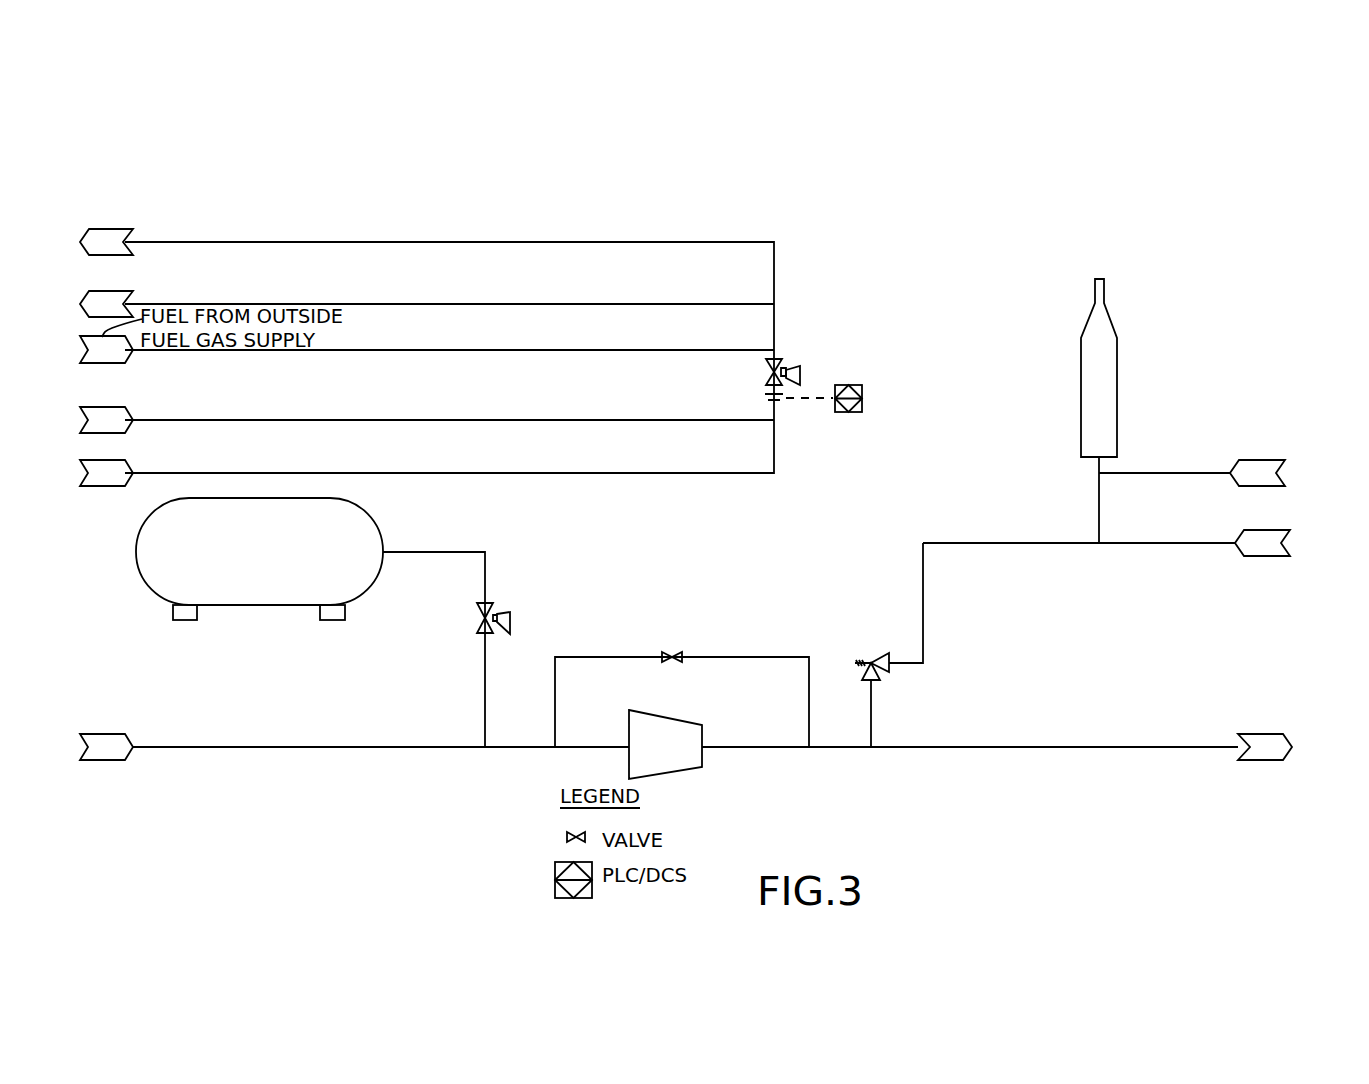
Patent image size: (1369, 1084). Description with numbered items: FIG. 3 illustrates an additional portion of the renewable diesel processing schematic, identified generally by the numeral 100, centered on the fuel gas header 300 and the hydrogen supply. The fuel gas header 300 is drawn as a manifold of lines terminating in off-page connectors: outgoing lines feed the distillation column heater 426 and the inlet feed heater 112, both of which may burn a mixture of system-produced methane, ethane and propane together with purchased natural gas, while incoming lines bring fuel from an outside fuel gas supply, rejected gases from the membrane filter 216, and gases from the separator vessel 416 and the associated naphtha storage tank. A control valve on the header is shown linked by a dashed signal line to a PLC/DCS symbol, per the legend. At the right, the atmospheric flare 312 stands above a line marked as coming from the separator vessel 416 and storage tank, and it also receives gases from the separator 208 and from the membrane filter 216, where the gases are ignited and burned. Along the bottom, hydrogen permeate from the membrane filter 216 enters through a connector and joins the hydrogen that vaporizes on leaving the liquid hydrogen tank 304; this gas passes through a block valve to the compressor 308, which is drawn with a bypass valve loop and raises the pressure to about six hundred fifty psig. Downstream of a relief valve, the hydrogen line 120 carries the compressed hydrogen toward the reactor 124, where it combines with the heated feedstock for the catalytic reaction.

The fuel gas system 100 is at (1078, 225).
The fuel gas header 300 is at (690, 214).
The atmospheric flare 312 is at (1112, 321).
The liquid hydrogen tank 304 is at (370, 513).
The compressor 308 is at (668, 717).
The hydrogen line 120 is at (1010, 747).
The reactor 124 is at (1258, 732).
The distillation column heater 426 is at (106, 228).
The inlet feed heater 112 is at (103, 289).
The membrane filter 216 is at (105, 408).
The separator vessel 416 is at (102, 462).
The separator 208 is at (1228, 548).